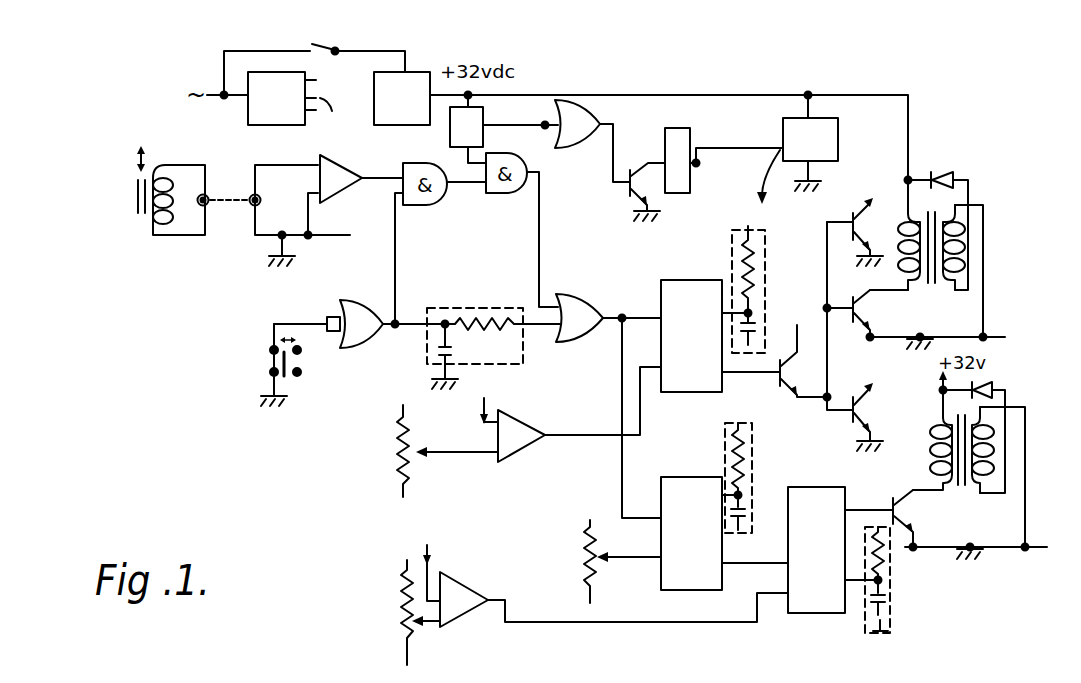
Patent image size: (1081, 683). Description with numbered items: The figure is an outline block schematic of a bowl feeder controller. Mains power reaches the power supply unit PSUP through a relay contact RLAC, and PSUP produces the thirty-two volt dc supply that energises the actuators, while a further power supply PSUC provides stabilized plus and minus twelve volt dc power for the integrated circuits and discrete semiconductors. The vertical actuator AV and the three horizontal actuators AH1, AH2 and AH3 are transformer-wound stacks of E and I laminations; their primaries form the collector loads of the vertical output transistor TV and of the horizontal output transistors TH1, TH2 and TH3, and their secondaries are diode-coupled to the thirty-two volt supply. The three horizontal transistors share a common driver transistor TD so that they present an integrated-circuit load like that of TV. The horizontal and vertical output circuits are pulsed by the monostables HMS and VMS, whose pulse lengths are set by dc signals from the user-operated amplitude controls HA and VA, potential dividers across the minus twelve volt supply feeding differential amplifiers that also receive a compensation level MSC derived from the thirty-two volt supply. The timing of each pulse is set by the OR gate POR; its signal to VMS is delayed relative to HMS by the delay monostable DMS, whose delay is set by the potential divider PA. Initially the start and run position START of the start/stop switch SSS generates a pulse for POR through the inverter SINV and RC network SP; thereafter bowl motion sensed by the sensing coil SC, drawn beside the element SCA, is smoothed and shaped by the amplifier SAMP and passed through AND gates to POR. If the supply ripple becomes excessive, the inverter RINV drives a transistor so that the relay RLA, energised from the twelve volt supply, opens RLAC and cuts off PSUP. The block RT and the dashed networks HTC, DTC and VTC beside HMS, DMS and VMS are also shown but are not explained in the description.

The sample capacitor / sensor element SCA is at (133, 200).
The sensing coil SC is at (157, 233).
The integrated circuit amplifier SAMP is at (327, 170).
The further power supply PSUC is at (310, 104).
The relay contact RLAC is at (337, 61).
The mains-energised power supply unit PSUP is at (402, 98).
The reset timer RT is at (504, 135).
The inverter RINV is at (610, 160).
The relay RLA is at (686, 143).
The dc voltage level MSC is at (797, 161).
The horizontal actuator AH1 is at (875, 192).
The horizontal output transistor TH1 is at (853, 240).
The heater timing circuit HTC is at (728, 252).
The inverter SINV is at (358, 303).
The RC network SP is at (487, 306).
The OR gate POR is at (608, 331).
The horizontal monostable HMS is at (662, 357).
The common driver transistor TD is at (794, 360).
The horizontal output transistor TH2 is at (870, 328).
The horizontal actuator AH2 is at (926, 254).
The horizontal actuator AH3 is at (883, 382).
The horizontal output transistor TH3 is at (851, 423).
The start/stop switch SSS is at (272, 371).
The start command START is at (391, 363).
The horizontal amplitude user-operated control HA is at (425, 457).
The vertical amplitude user-operated control VA is at (396, 615).
The delay monostable DMS is at (724, 533).
The user control potential divider PA is at (603, 562).
The delay timing circuit DTC is at (755, 492).
The vertical monostable VMS is at (840, 550).
The valve timing circuit VTC is at (900, 634).
The vertical output transistor TV is at (910, 525).
The vertical actuator AV is at (987, 450).